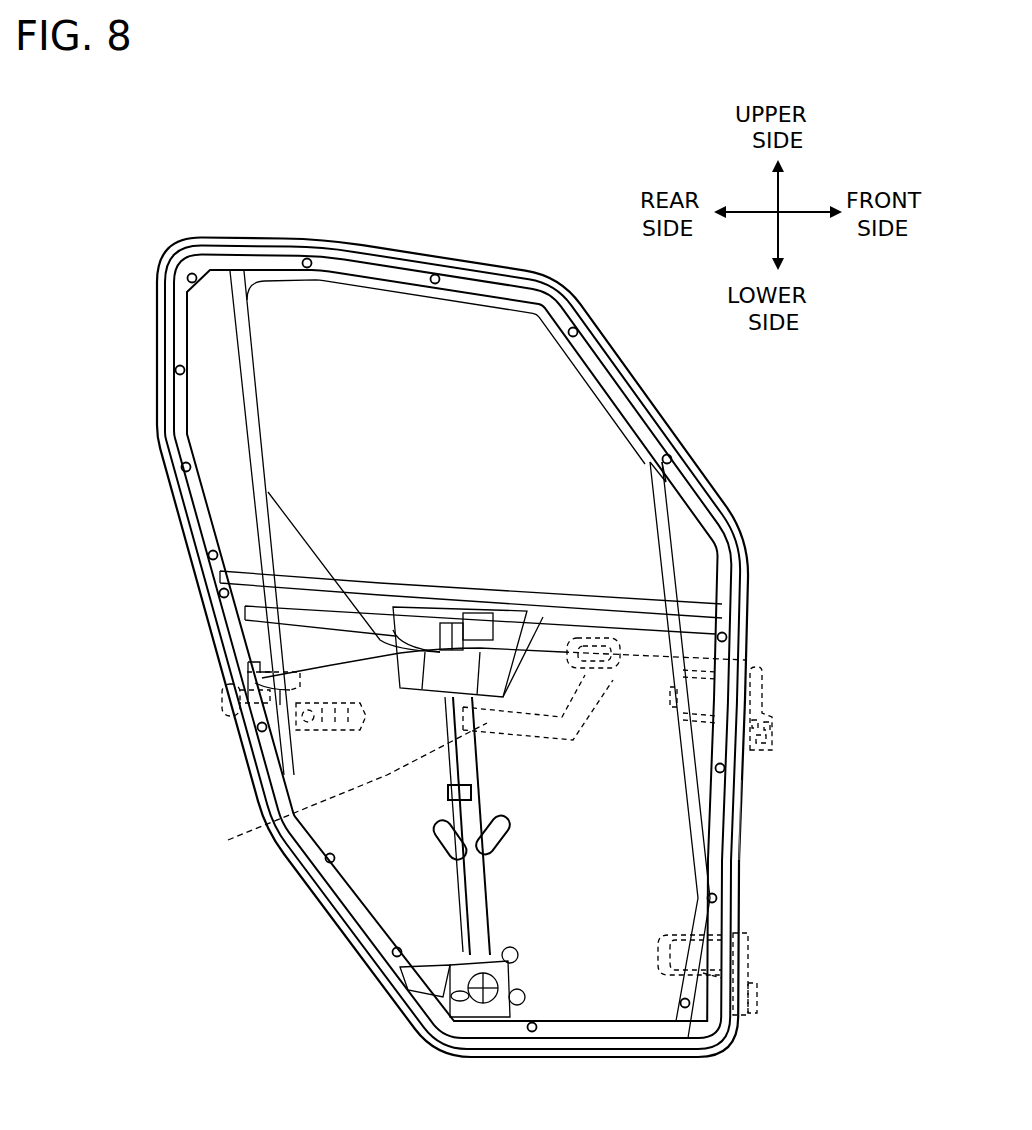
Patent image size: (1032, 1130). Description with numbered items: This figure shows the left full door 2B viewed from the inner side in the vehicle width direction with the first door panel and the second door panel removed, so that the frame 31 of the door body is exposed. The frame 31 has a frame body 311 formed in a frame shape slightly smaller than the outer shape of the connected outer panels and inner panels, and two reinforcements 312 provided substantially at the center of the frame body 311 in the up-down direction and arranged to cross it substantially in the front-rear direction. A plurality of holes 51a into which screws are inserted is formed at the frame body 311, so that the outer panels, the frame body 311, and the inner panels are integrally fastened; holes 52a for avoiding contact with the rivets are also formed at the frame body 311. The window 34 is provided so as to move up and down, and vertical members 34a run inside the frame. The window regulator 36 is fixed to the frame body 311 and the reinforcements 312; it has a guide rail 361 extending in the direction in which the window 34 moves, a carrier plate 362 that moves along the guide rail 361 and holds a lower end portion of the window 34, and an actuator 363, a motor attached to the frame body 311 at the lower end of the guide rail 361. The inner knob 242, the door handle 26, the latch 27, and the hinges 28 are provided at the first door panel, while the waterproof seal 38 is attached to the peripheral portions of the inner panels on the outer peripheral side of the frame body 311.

The full door 2B is at (562, 188).
The frame 31 is at (633, 399).
The frame body 311 is at (180, 417).
The window 34 is at (300, 338).
The vertical bar 34a is at (252, 440).
The reinforcement 312 is at (218, 577).
The hole 51a is at (307, 258).
The hole 52a is at (220, 594).
The latch 27 is at (230, 698).
The door handle 26 is at (228, 840).
The inner knob 242 is at (745, 660).
The carrier plate 362 is at (477, 635).
The guide rail 361 is at (487, 883).
The window regulator 36 is at (460, 865).
The actuator 363 is at (522, 966).
The hinge 28 is at (763, 694).
The waterproof seal 38 is at (742, 815).